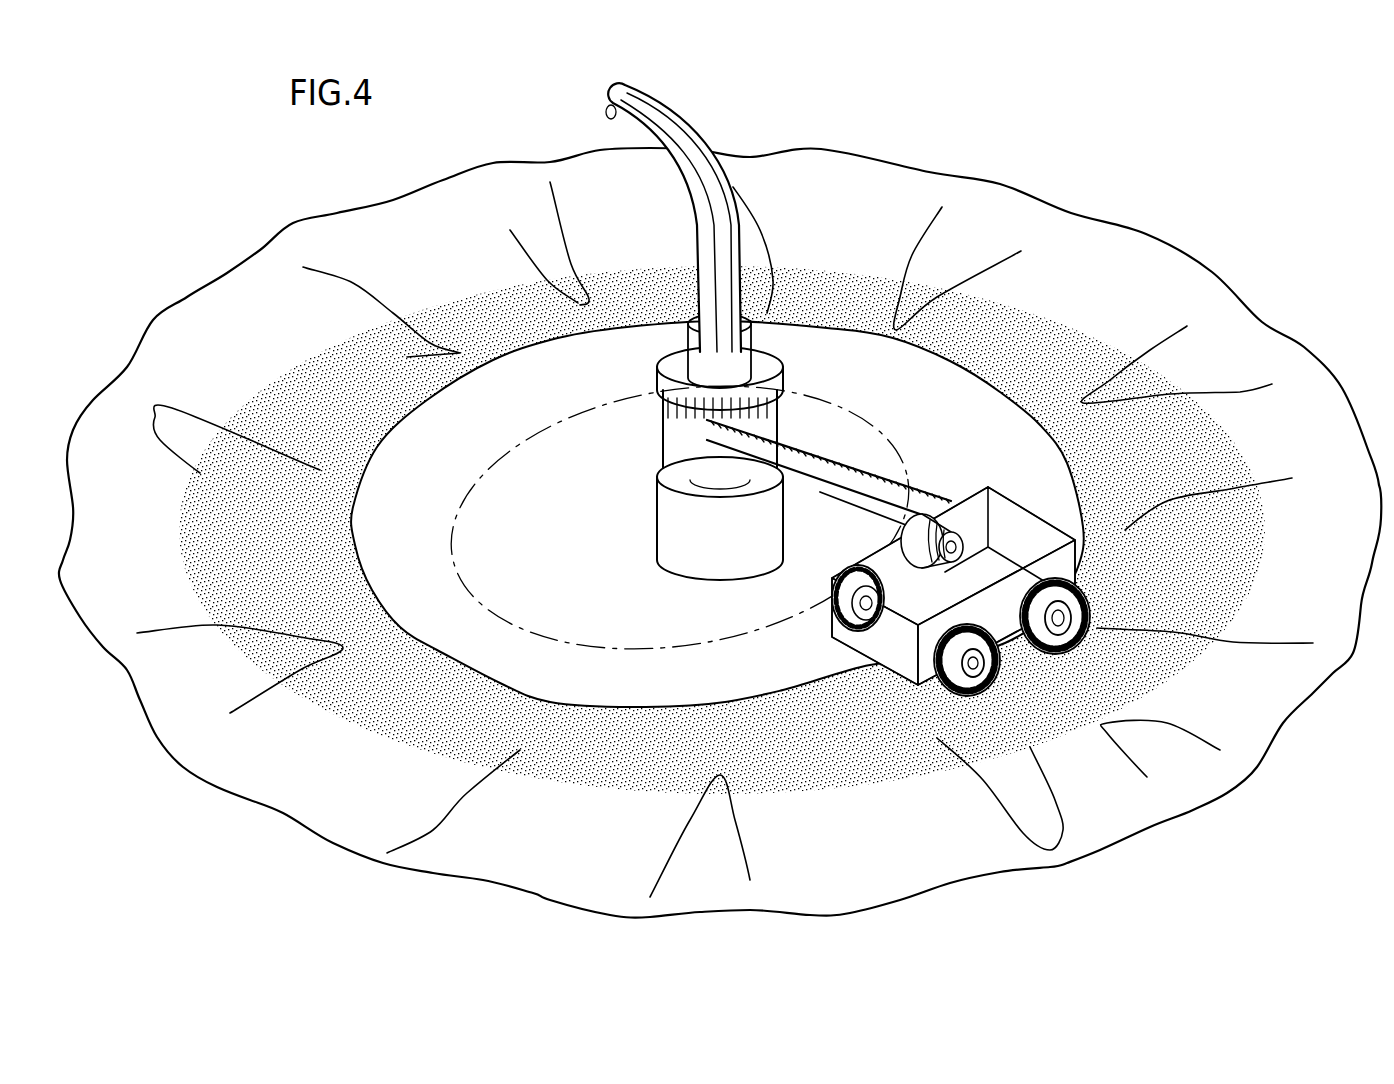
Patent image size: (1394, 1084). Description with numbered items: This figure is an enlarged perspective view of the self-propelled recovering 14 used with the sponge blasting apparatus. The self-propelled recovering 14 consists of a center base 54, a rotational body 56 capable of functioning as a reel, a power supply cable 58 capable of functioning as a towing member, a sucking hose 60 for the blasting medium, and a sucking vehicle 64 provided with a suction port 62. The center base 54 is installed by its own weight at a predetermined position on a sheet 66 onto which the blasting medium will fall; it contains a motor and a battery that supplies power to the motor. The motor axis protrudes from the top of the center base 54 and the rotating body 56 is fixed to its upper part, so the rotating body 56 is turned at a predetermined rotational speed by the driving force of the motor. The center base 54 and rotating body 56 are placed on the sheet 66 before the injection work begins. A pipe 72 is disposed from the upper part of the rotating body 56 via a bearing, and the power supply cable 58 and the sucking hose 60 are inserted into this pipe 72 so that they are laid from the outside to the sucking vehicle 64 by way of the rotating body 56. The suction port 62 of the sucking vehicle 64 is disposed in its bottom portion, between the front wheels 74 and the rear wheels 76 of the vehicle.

The self-propelled recovering 14 is at (1108, 208).
The center base 54 is at (676, 541).
The rotational body 56 is at (688, 440).
The power supply cable 58 is at (672, 108).
The sucking hose 60 is at (607, 117).
The suction port 62 is at (892, 690).
The sucking vehicle 64 is at (968, 488).
The sheet 66 is at (1152, 265).
The pipe 72 is at (740, 372).
The front wheels 74 is at (828, 600).
The rear wheels 76 is at (955, 510).